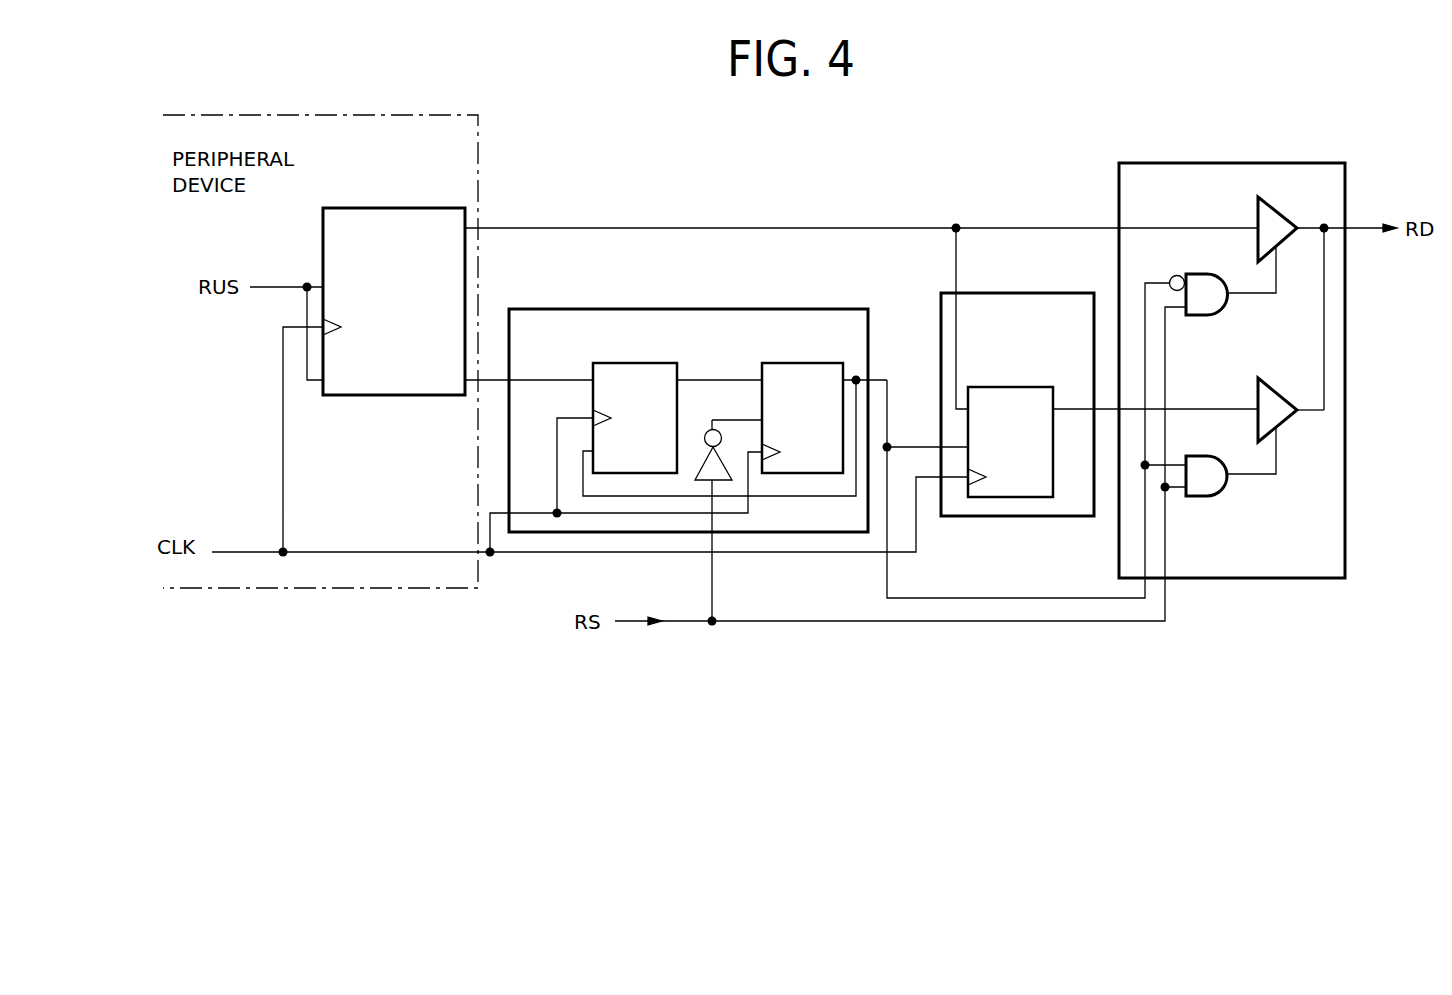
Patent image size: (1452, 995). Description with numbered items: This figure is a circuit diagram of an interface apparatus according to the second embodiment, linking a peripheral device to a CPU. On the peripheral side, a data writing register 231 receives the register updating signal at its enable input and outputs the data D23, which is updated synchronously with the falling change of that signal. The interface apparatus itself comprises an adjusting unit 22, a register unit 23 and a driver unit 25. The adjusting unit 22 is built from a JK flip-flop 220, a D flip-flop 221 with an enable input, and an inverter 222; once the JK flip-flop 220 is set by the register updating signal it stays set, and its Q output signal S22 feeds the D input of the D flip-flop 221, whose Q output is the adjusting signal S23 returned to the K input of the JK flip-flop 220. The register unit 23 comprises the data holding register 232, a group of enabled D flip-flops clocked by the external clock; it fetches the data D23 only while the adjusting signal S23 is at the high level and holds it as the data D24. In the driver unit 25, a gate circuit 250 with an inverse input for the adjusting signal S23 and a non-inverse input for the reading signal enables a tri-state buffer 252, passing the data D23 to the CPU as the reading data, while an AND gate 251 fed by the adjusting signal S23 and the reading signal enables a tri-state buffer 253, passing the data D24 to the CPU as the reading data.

The adjusting unit 22 is at (535, 309).
The register unit 23 is at (1033, 293).
The driver unit 25 is at (1143, 163).
The JK flip-flop 220 is at (665, 362).
The D flip-flop 221 is at (800, 362).
The inverter 222 is at (697, 482).
The data writing register 231 is at (388, 207).
The data holding register 232 is at (1027, 497).
The gate circuit 250 is at (1205, 315).
The AND gate 251 is at (1195, 496).
The 3-state buffer 252 is at (1310, 206).
The 3-state buffer 253 is at (1265, 378).
The data D23 is at (863, 228).
The data D24 is at (1075, 409).
The signal S22 is at (718, 380).
The adjusting signal S23 is at (925, 598).